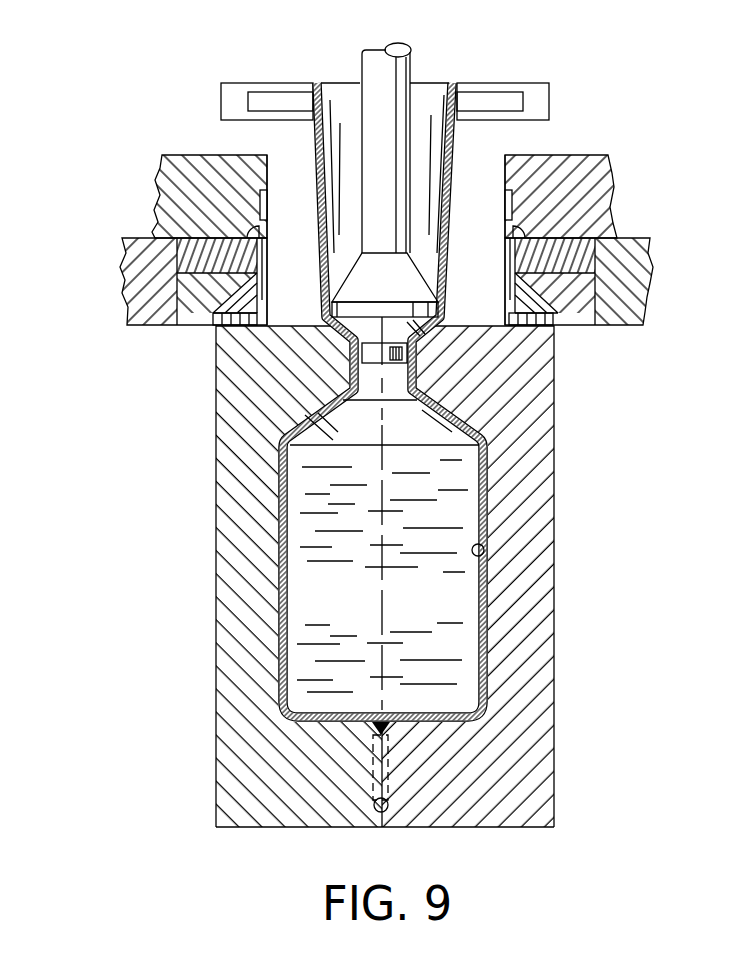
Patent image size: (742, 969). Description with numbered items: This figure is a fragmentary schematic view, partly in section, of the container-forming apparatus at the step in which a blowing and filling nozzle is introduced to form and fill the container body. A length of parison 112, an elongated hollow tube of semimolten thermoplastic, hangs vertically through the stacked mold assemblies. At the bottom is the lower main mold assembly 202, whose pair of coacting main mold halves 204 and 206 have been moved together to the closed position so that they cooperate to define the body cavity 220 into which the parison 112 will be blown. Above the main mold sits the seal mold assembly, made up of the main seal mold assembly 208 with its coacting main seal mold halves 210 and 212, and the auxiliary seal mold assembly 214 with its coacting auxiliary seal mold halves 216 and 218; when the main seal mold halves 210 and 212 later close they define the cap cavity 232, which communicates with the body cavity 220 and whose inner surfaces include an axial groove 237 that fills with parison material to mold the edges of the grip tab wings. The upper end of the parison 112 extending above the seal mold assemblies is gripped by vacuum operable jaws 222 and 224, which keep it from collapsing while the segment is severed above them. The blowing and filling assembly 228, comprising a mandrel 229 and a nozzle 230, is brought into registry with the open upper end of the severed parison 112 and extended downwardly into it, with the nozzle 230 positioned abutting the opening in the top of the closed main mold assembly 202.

The parison 112 is at (313, 132).
The lower main mold assembly 202 is at (560, 710).
The main mold half 204 is at (530, 765).
The main mold half 206 is at (233, 765).
The main seal mold assembly 208 is at (620, 334).
The main seal mold half 210 is at (637, 282).
The main seal mold half 212 is at (153, 320).
The auxiliary seal mold assembly 214 is at (590, 143).
The auxiliary seal mold half 216 is at (603, 208).
The auxiliary seal mold half 218 is at (165, 208).
The body cavity 220 is at (487, 563).
The vacuum operable jaw 222 is at (548, 97).
The vacuum operable jaw 224 is at (235, 95).
The blowing and filling assembly 228 is at (422, 67).
The mandrel 229 is at (382, 77).
The nozzle 230 is at (405, 296).
The cap cavity 232 is at (243, 319).
The axial groove 237 is at (293, 283).